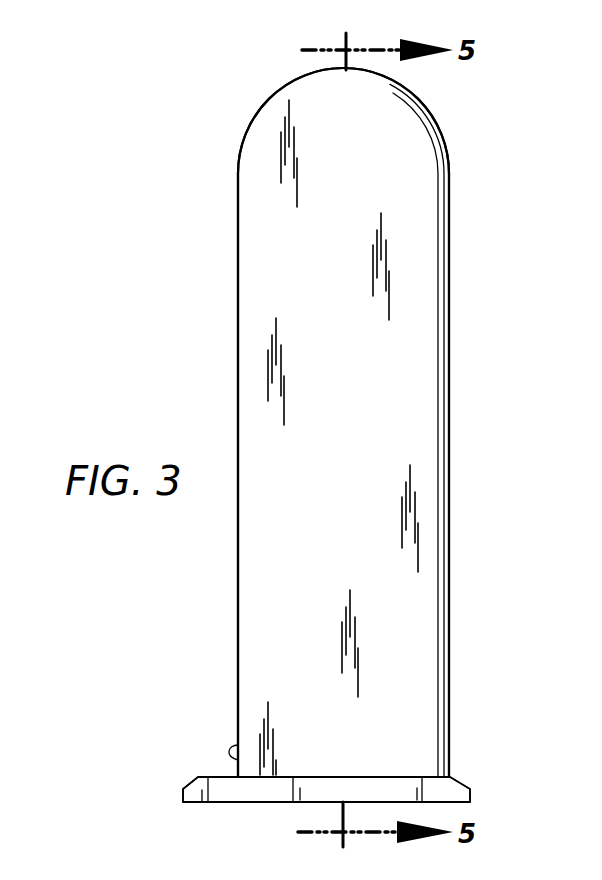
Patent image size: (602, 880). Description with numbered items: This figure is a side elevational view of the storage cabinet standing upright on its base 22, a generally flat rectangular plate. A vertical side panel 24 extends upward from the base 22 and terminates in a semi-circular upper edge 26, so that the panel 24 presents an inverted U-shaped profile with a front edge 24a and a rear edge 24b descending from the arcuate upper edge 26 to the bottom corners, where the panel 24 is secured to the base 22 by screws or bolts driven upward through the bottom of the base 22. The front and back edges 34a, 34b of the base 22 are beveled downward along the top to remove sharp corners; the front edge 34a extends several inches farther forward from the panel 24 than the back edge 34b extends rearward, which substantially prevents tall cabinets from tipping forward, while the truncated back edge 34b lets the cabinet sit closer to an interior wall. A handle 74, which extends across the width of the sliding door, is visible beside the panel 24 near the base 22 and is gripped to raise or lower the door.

The base 22 is at (200, 802).
The vertical side panel 24 is at (402, 392).
The front edge of panel 24a is at (238, 315).
The rear edge of panel 24b is at (450, 262).
The semi-circular upper edge 26 is at (272, 97).
The front edge of base 34a is at (183, 790).
The back edge of base 34b is at (470, 792).
The handle 74 is at (230, 743).